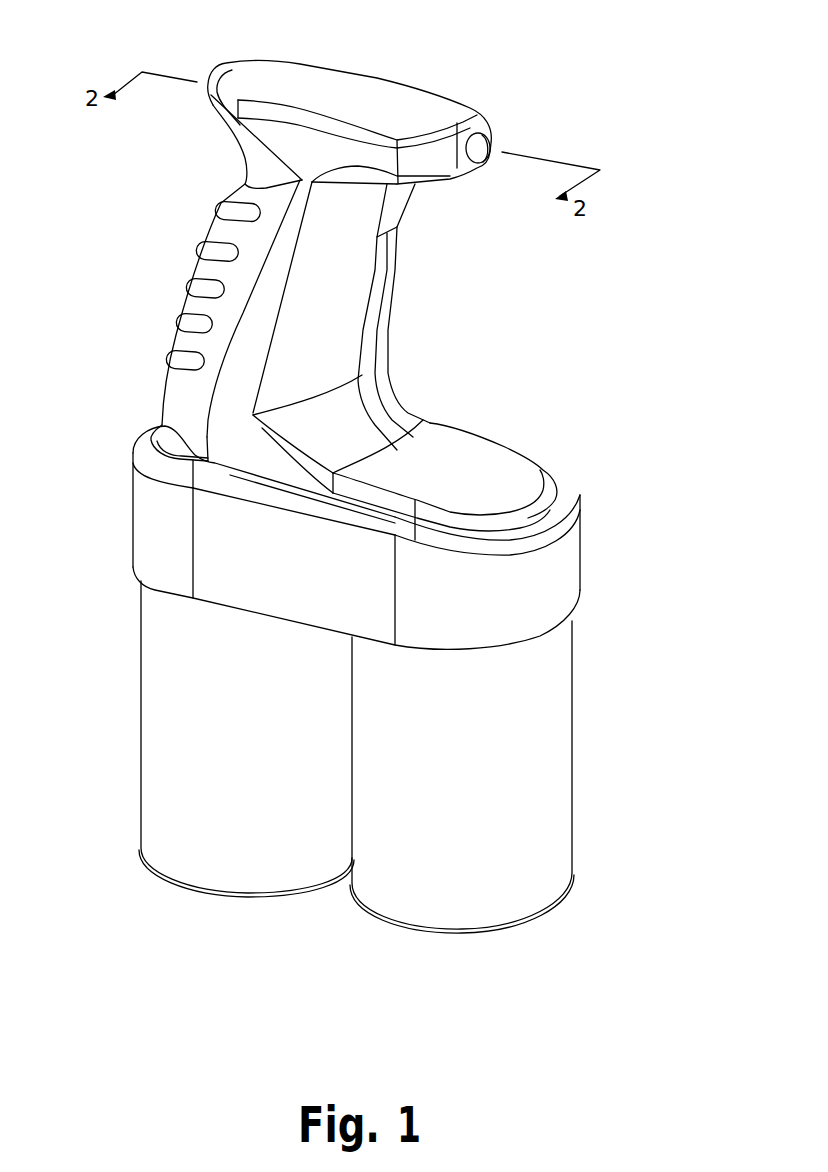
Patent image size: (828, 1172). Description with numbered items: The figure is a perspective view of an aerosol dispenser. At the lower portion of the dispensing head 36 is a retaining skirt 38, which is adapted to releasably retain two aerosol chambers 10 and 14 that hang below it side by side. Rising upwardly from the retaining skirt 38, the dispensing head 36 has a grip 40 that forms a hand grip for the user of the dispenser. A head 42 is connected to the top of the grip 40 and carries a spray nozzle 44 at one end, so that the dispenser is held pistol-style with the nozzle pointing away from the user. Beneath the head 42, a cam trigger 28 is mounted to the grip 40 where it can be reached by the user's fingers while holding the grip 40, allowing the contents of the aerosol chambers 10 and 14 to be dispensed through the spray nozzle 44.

The aerosol chamber 10 is at (560, 736).
The aerosol chamber 14 is at (148, 640).
The cam trigger 28 is at (408, 209).
The dispensing head 36 is at (418, 397).
The retaining skirt 38 is at (540, 574).
The grip 40 is at (342, 324).
The head 42 is at (373, 93).
The spray nozzle 44 is at (490, 142).